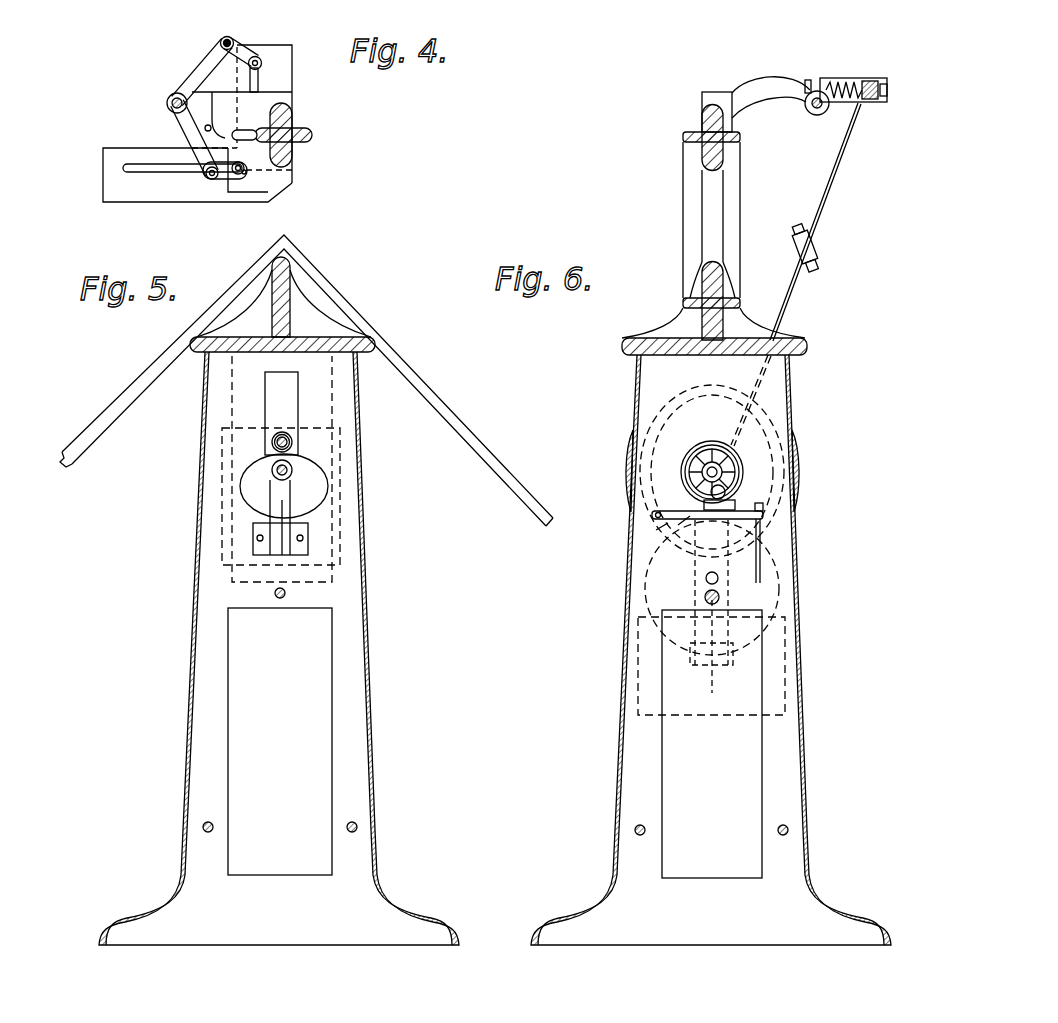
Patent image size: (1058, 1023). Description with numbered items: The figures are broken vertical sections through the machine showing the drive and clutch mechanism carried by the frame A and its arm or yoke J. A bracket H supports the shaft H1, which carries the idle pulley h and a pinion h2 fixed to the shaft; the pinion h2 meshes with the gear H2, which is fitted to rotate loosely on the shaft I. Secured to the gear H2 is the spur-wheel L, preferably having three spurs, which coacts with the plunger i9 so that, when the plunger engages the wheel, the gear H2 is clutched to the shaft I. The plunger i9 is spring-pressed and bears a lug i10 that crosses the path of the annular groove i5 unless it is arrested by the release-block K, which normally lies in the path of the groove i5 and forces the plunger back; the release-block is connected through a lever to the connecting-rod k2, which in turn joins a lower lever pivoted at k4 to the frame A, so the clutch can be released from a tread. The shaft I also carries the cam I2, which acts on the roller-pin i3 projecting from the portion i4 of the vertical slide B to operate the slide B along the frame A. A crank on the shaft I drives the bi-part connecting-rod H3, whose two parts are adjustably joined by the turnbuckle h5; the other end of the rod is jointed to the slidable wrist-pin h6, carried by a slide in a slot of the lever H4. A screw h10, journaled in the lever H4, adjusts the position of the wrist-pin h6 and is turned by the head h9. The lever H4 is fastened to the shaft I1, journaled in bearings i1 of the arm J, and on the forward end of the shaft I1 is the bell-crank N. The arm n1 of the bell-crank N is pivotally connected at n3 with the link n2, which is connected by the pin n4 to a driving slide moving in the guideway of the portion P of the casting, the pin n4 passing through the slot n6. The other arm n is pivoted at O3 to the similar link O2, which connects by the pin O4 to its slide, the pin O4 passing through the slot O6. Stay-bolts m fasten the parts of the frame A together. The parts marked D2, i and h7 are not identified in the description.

In FIG. 5, the machine-frame A is at (279, 648).
In FIG. 6, the machine-frame A is at (711, 650).
In FIG. 5, the vertical slide B is at (342, 556).
In FIG. 5, the inclined guard plates D2 is at (432, 365).
In FIG. 4, the arm or yoke-frame J is at (294, 160).
In FIG. 5, the arm or yoke-frame J is at (290, 283).
In FIG. 6, the arm or yoke-frame J is at (736, 213).
In FIG. 4, the extending portion of casting P is at (103, 172).
In FIG. 4, the bell-crank N is at (167, 103).
In FIG. 4, the arm of bell-crank n is at (197, 67).
In FIG. 4, the arm of bell-crank n1 is at (192, 133).
In FIG. 4, the link n2 is at (233, 179).
In FIG. 4, the pivot n3 is at (210, 180).
In FIG. 4, the pin n4 is at (241, 185).
In FIG. 4, the slot n6 is at (150, 170).
In FIG. 4, the link O2 is at (246, 56).
In FIG. 4, the pivot O3 is at (226, 40).
In FIG. 4, the pin O4 is at (259, 61).
In FIG. 4, the slot O6 is at (260, 81).
In FIG. 5, the shaft I is at (328, 480).
In FIG. 6, the shaft I is at (820, 116).
In FIG. 4, the shaft I1 is at (188, 103).
In FIG. 5, the cam I2 is at (305, 500).
In FIG. 6, the pivot pin i is at (812, 112).
In FIG. 5, the bearings i1 is at (290, 477).
In FIG. 5, the roller-pin i3 is at (283, 432).
In FIG. 5, the portion of vertical slide i4 is at (292, 440).
In FIG. 6, the annular groove i5 is at (730, 423).
In FIG. 6, the plunger i9 is at (738, 486).
In FIG. 6, the lug i10 is at (727, 505).
In FIG. 6, the spur-wheel L is at (687, 467).
In FIG. 6, the release-block K is at (707, 532).
In FIG. 6, the connecting-rod k2 is at (753, 573).
In FIG. 6, the pivot k4 is at (708, 522).
In FIG. 6, the bracket H is at (735, 664).
In FIG. 6, the shaft H1 is at (718, 574).
In FIG. 6, the gear H2 is at (745, 471).
In FIG. 6, the bi-part connecting-rod H3 is at (818, 212).
In FIG. 6, the lever H4 is at (846, 79).
In FIG. 6, the idle pulley h is at (783, 597).
In FIG. 6, the pinion h2 is at (706, 579).
In FIG. 6, the turnbuckle h5 is at (802, 264).
In FIG. 6, the slidable wrist-pin h6 is at (878, 79).
In FIG. 6, the abutment h7 is at (880, 100).
In FIG. 6, the head h9 is at (806, 80).
In FIG. 6, the screw h10 is at (860, 100).
In FIG. 5, the stay-bolts m is at (346, 827).
In FIG. 6, the stay-bolts m is at (777, 830).